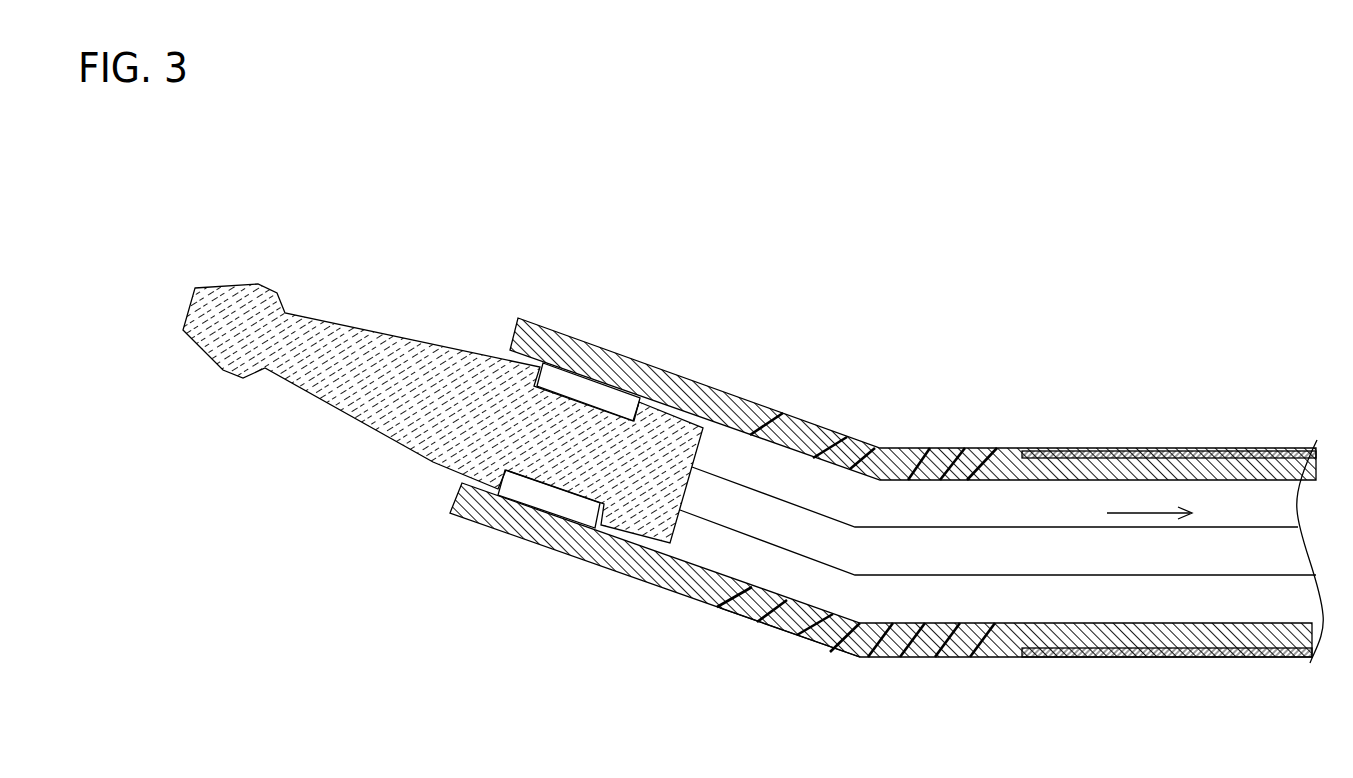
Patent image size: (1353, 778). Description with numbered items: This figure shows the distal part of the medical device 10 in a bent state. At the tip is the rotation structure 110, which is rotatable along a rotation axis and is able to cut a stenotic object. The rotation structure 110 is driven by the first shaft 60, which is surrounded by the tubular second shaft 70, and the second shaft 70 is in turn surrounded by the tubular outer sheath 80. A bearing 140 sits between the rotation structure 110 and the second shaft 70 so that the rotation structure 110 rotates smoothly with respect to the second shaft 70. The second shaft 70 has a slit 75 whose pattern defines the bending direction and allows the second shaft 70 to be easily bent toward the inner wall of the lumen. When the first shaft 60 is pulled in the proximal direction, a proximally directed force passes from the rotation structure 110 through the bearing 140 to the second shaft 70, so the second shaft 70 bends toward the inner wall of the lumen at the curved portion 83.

The medical device 10 is at (848, 178).
The first shaft 60 is at (1048, 552).
The second shaft 70 is at (737, 410).
The slit 75 is at (918, 446).
The outer sheath 80 is at (1128, 452).
The curved portion 83 is at (800, 672).
The rotation structure 110 is at (390, 305).
The bearing 140 is at (592, 386).